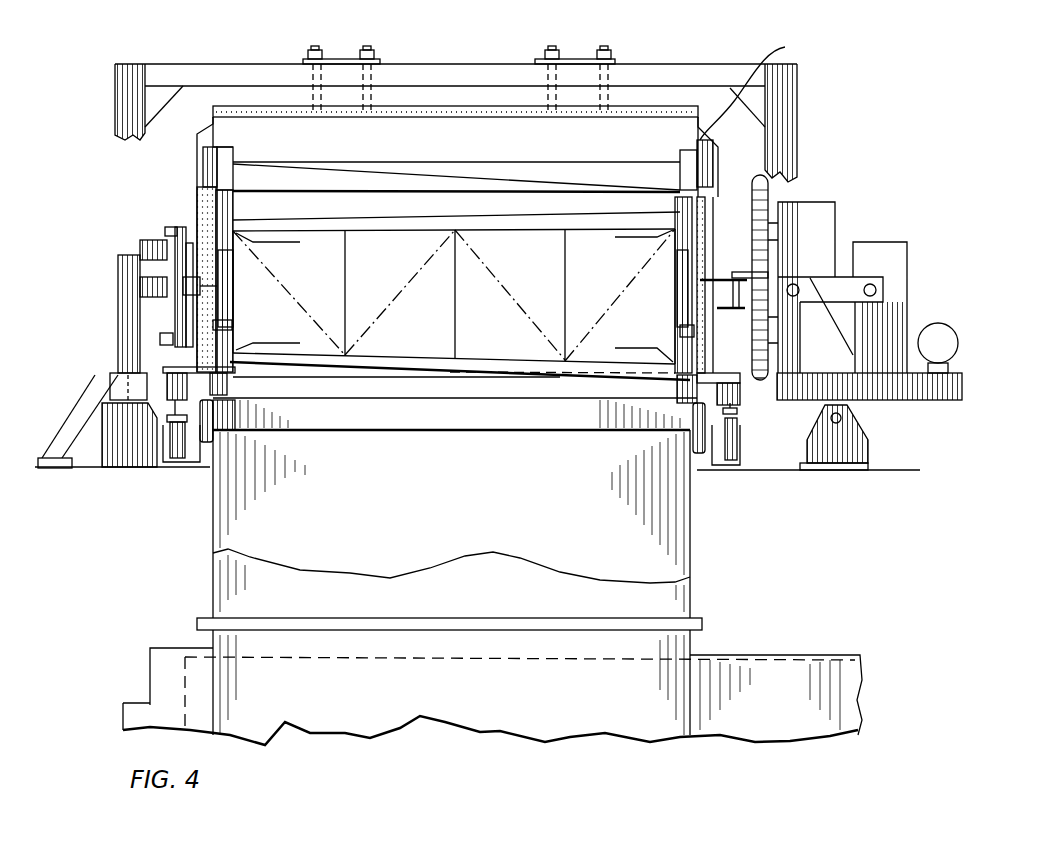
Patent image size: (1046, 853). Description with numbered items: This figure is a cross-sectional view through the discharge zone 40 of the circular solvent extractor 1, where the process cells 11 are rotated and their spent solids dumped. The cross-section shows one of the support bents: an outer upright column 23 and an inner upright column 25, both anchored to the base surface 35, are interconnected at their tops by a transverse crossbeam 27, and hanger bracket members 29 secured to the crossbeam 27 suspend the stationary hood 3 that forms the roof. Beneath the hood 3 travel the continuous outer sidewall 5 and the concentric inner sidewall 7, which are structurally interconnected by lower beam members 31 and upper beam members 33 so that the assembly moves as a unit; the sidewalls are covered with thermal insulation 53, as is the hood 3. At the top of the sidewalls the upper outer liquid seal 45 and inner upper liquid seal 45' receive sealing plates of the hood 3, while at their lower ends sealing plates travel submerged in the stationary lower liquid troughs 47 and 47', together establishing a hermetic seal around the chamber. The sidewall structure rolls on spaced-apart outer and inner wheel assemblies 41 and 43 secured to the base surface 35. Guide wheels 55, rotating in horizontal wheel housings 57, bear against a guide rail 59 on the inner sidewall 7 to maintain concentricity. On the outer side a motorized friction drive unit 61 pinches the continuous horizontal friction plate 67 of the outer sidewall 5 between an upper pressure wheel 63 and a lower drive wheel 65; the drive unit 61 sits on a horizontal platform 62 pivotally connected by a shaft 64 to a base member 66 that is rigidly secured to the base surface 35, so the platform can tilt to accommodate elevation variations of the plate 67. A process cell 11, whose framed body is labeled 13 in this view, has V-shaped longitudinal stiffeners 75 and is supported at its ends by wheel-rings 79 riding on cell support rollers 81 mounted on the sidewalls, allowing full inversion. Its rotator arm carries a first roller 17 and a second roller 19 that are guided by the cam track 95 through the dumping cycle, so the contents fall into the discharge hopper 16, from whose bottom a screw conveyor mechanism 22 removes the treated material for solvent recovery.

The circular solvent extractor 1 is at (677, 58).
The stationary hood 3 is at (690, 110).
The outer sidewall 5 is at (705, 225).
The inner sidewall 7 is at (200, 218).
The process cells 11 is at (402, 362).
The truss frame 13 is at (395, 282).
The discharge hopper 16 is at (467, 508).
The first roller 17 is at (175, 225).
The second roller 19 is at (160, 337).
The screw conveyor mechanism 22 is at (458, 704).
The outer upright column 23 is at (790, 125).
The inner upright column 25 is at (118, 105).
The transverse crossbeam 27 is at (492, 63).
The hanger bracket members 29 is at (318, 50).
The lower beam members 31 is at (525, 415).
The upper beam members 33 is at (455, 163).
The base surface 35 is at (897, 470).
The discharge zone 40 is at (459, 96).
The outer wheel assemblies 41 is at (727, 465).
The inner wheel assemblies 43 is at (177, 460).
The upper outer liquid seal 45 is at (667, 159).
The inner upper liquid seal 45' is at (253, 158).
The lower liquid trough 47 is at (647, 445).
The lower inner liquid trough 47' is at (251, 435).
The thermal insulation 53 is at (756, 83).
The guide wheels 55 is at (112, 385).
The wheel housings 57 is at (118, 468).
The guide rail 59 is at (163, 378).
The motorized friction drive unit 61 is at (822, 232).
The horizontal platform 62 is at (890, 398).
The pressure wheel 63 is at (770, 188).
The shaft 64 is at (835, 422).
The drive wheel 65 is at (760, 385).
The base member 66 is at (840, 470).
The friction plate 67 is at (738, 275).
The longitudinal stiffener 75 is at (487, 205).
The wheel-ring 79 is at (228, 292).
The cell support rollers 81 is at (232, 323).
The cam track 95 is at (143, 250).